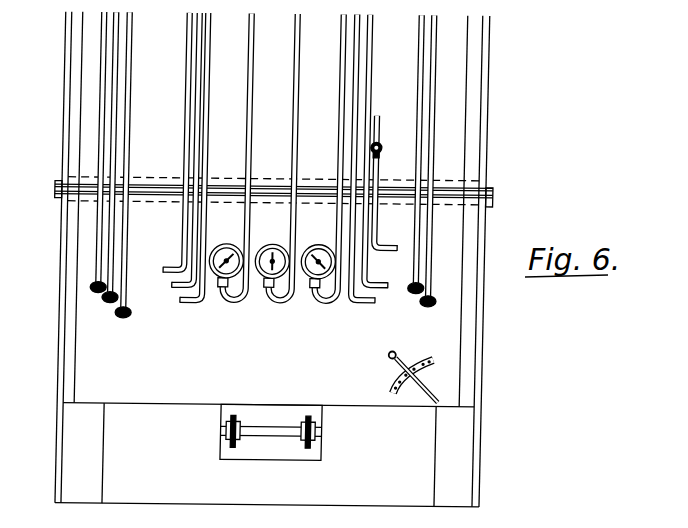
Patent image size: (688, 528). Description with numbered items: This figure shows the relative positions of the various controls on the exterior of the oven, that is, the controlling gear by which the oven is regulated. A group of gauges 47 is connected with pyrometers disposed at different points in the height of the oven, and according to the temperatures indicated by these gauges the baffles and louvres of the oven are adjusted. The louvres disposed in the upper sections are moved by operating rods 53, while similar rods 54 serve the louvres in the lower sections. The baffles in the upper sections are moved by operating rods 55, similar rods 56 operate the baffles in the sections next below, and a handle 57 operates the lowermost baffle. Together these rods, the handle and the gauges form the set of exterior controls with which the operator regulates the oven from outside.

The gauges 47 is at (318, 282).
The operating rods for the louvres 53 is at (208, 230).
The operating rods for the louvres in the lower sections 54 is at (386, 153).
The operating rods for the baffles 55 is at (104, 149).
The operating rods for the baffles in the sections next below 56 is at (432, 216).
The handle 57 is at (405, 349).